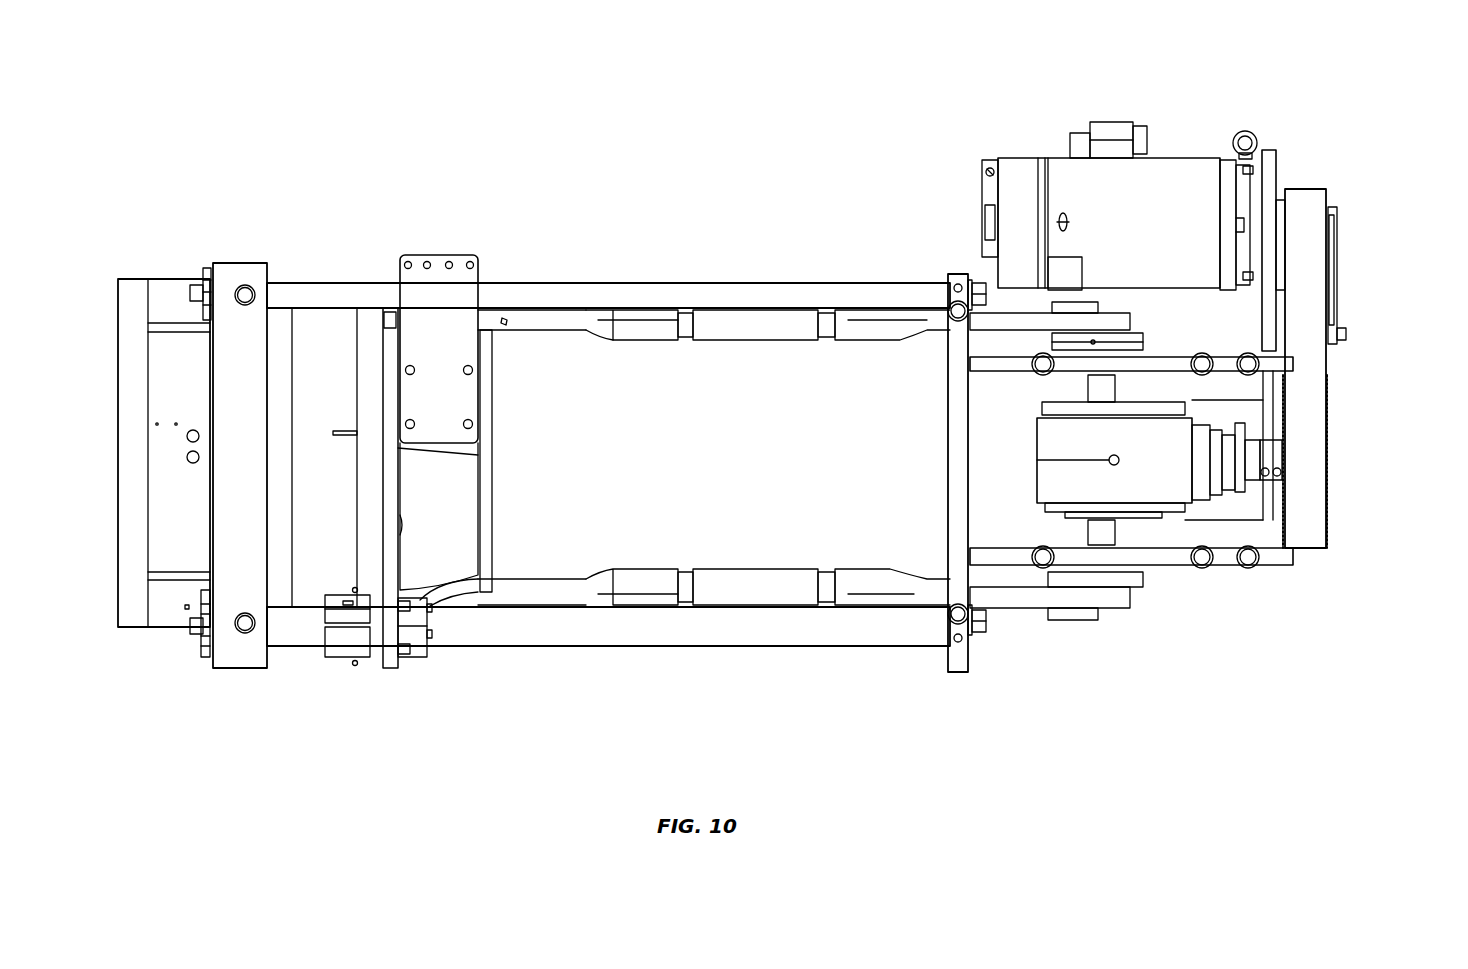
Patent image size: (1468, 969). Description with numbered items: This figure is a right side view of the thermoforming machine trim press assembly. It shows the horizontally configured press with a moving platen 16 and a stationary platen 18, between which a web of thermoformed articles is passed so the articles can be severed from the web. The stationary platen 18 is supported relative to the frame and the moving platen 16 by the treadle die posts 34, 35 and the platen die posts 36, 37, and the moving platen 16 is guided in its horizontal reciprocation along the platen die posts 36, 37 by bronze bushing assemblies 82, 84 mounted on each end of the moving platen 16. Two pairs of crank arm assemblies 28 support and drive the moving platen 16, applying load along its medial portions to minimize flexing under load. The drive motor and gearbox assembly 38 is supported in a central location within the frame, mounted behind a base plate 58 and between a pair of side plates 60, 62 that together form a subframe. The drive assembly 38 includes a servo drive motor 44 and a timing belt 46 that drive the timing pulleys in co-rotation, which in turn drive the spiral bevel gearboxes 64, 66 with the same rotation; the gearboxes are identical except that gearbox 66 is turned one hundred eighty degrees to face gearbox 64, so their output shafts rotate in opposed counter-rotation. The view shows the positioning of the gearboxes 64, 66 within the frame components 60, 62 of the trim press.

The stationary platen 18 is at (252, 458).
The moving platen 16 is at (451, 508).
The crank arm assemblies 28 is at (671, 357).
The treadle die post 35 is at (608, 254).
The treadle die post 34 is at (600, 283).
The platen die post 37 is at (608, 663).
The platen die post 36 is at (603, 648).
The bronze bushing 84 is at (378, 688).
The bronze bushing 82 is at (400, 657).
The base plate 58 is at (970, 503).
The servo drive motor 44 is at (1162, 197).
The side plate 60 is at (1185, 355).
The spiral bevel gearbox 66 is at (1159, 517).
The spiral bevel gearbox 64 is at (1163, 480).
The side plate 62 is at (1282, 565).
The timing belt 46 is at (1305, 253).
The drive motor and gearbox assembly 38 is at (1353, 310).